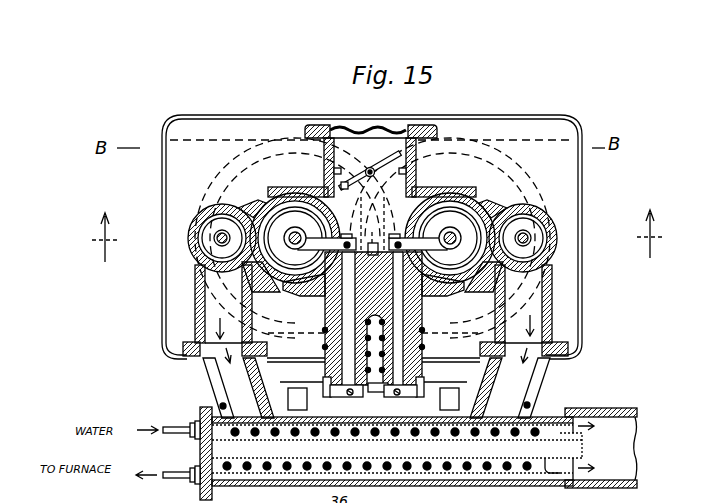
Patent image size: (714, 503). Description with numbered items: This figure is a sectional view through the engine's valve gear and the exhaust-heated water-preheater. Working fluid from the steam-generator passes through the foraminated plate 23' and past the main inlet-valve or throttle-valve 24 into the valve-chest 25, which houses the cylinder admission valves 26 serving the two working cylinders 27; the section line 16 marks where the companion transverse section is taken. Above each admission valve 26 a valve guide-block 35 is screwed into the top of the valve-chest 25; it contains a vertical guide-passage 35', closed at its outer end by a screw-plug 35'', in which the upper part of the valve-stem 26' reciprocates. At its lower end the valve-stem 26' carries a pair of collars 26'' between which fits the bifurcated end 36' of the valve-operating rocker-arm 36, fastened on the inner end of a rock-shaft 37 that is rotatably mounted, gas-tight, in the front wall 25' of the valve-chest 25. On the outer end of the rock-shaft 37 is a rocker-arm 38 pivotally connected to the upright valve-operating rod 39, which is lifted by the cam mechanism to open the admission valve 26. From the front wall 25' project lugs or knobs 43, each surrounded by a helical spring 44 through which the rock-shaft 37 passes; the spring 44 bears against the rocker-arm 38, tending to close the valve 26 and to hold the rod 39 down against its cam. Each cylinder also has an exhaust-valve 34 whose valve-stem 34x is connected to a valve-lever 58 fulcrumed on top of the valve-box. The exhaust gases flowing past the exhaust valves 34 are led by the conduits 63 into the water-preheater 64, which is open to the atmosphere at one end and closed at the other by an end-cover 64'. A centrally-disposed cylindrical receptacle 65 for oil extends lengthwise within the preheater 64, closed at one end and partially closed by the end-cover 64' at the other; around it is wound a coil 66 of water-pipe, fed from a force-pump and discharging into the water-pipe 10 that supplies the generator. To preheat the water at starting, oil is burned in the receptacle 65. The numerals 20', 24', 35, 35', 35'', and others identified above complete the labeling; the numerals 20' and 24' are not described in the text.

The water-pipe 10 is at (178, 426).
The section line 16— 16 is at (370, 239).
The member 20' is at (261, 498).
The foraminated plate 23' is at (371, 114).
The main inlet-valve or throttle-valve 24 is at (371, 140).
The member 24' is at (416, 498).
The valve-chest 25 is at (391, 219).
The front wall of valve-chest 25' is at (372, 226).
The cylinder admission valve 26 is at (372, 252).
The valve-stem 26' is at (398, 199).
The collars 26'' is at (366, 213).
The working cylinder 27 is at (218, 158).
The exhaust-valve 34 is at (228, 252).
The valve-stem of exhaust-valve 34x is at (218, 241).
The valve guide-block 35 is at (452, 498).
The vertical guide-passage 35' is at (491, 498).
The screw-plug 35'' is at (304, 498).
The valve-operating rocker-arm 36 is at (372, 229).
The bifurcated end of rocker-arm 36' is at (381, 204).
The rock-shaft 37 is at (398, 283).
The rocker-arm 38 is at (285, 384).
The valve-operating rod 39 is at (290, 404).
The lugs or knobs 43 is at (322, 341).
The helical spring 44 is at (382, 375).
The valve-lever 58 is at (530, 500).
The conduits 63 is at (200, 366).
The water-preheater 64 is at (601, 436).
The end-cover 64' is at (180, 439).
The cylindrical receptacle for oil 65 is at (198, 452).
The coil of water-pipe 66 is at (541, 425).